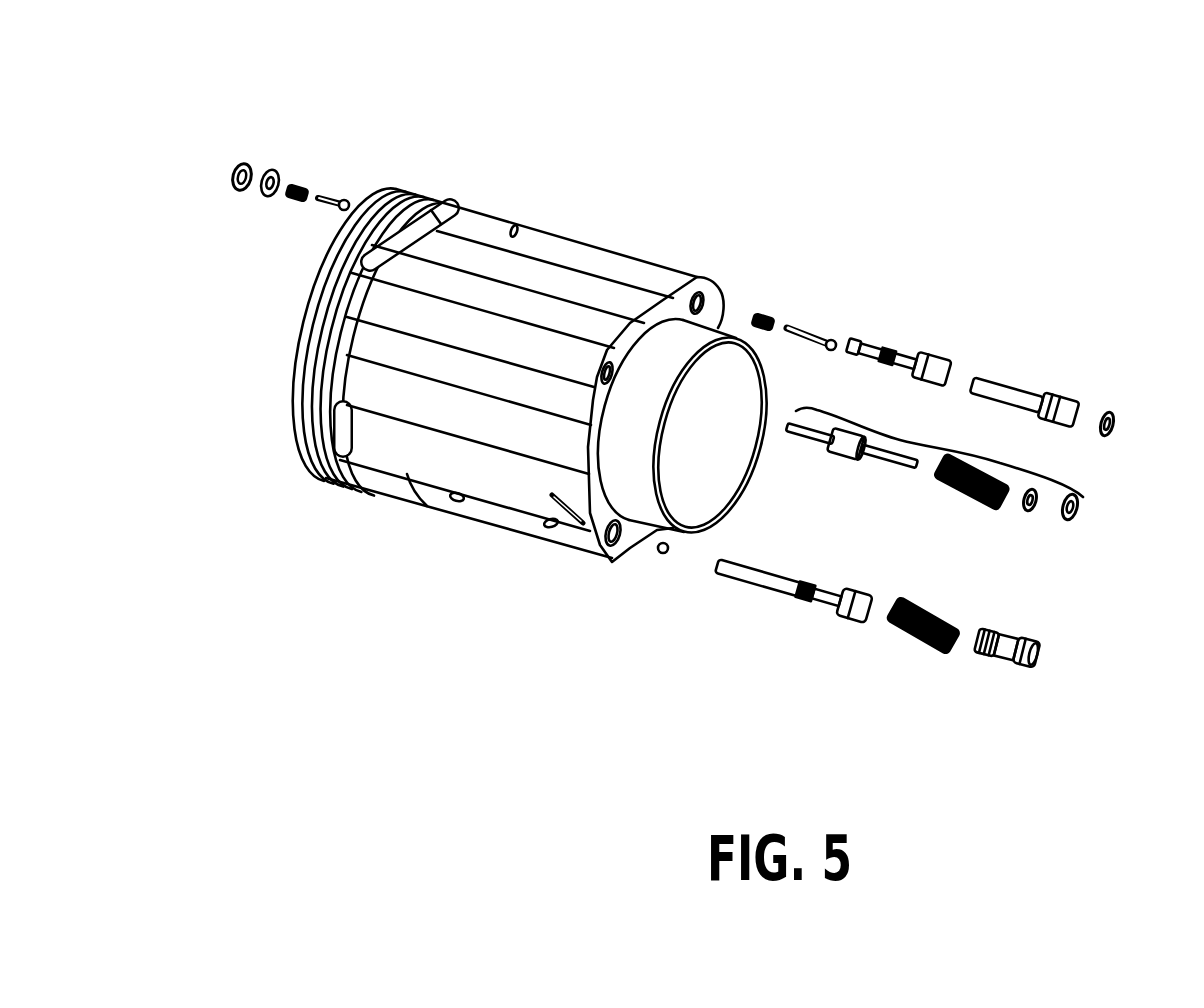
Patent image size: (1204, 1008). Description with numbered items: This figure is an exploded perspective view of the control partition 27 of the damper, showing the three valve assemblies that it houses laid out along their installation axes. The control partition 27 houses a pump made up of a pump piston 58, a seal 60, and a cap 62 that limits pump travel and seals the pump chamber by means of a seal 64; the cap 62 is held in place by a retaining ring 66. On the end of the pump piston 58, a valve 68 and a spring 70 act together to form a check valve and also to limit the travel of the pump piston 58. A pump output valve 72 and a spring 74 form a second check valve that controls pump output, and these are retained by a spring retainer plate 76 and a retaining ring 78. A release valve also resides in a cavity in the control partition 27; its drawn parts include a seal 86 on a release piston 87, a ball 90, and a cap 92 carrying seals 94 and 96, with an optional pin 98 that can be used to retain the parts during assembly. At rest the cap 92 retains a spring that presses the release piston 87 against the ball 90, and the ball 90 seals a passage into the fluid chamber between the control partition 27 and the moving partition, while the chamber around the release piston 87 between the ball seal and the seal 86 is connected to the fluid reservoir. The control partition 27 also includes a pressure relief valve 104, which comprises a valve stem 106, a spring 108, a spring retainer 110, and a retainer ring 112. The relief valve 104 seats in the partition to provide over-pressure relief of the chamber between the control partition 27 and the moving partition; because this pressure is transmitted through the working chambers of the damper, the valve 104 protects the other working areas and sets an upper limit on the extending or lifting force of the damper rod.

The control partition 27 is at (473, 520).
The pump piston 58 is at (908, 352).
The seal 60 is at (887, 333).
The cap 62 is at (1013, 383).
The seal 64 is at (1060, 390).
The retaining ring 66 is at (1110, 438).
The valve 68 is at (830, 352).
The spring 70 is at (770, 316).
The pump output valve 72 is at (320, 209).
The spring 74 is at (292, 198).
The spring retainer plate 76 is at (273, 167).
The retaining ring 78 is at (243, 163).
The seal 86 is at (810, 595).
The release piston 87 is at (753, 583).
The ball 90 is at (665, 553).
The cap 92 is at (1033, 667).
The seal 94 is at (987, 663).
The seal 96 is at (1020, 670).
The pin 98 is at (557, 527).
The relief valve 104 is at (939, 452).
The valve stem 106 is at (810, 445).
The spring 108 is at (953, 497).
The spring retainer 110 is at (1033, 515).
The retainer ring 112 is at (1065, 523).